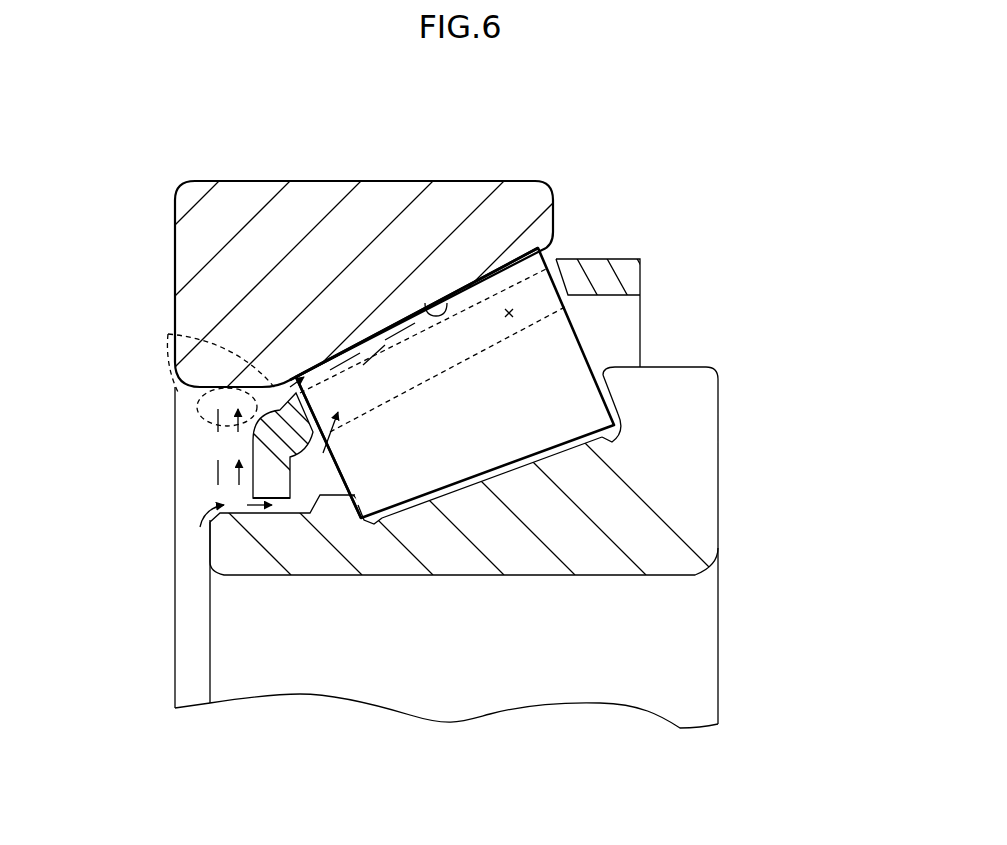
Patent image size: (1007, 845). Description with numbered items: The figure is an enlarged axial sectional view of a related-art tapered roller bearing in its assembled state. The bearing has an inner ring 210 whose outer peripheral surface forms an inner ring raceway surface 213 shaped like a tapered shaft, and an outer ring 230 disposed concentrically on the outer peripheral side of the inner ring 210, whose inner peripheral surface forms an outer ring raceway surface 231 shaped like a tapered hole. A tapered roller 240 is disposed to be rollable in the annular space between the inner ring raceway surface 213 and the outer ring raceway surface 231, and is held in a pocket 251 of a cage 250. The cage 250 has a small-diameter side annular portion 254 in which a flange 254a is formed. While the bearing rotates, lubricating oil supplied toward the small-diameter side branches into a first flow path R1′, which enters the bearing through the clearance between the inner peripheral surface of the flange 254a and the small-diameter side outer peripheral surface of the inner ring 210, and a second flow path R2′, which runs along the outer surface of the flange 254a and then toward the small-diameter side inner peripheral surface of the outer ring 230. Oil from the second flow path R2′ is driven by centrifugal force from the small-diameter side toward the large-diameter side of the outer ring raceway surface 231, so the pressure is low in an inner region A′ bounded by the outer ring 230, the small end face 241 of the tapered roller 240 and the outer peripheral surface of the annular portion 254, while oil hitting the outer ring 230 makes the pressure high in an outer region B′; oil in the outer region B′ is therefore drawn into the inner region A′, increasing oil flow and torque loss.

The inner ring 210 is at (724, 452).
The inner ring raceway surface 213 is at (453, 476).
The outer ring 230 is at (163, 241).
The outer ring raceway surface 231 is at (430, 311).
The tapered roller 240 is at (553, 360).
The small end face 241 is at (348, 476).
The cage 250 is at (614, 244).
The pocket 251 is at (509, 308).
The small-diameter side annular portion 254 is at (257, 445).
The flange 254a is at (257, 494).
The inner region A′ is at (168, 334).
The outer region B′ is at (198, 398).
The first flow path R1′ is at (309, 470).
The second flow path R2′ is at (205, 419).